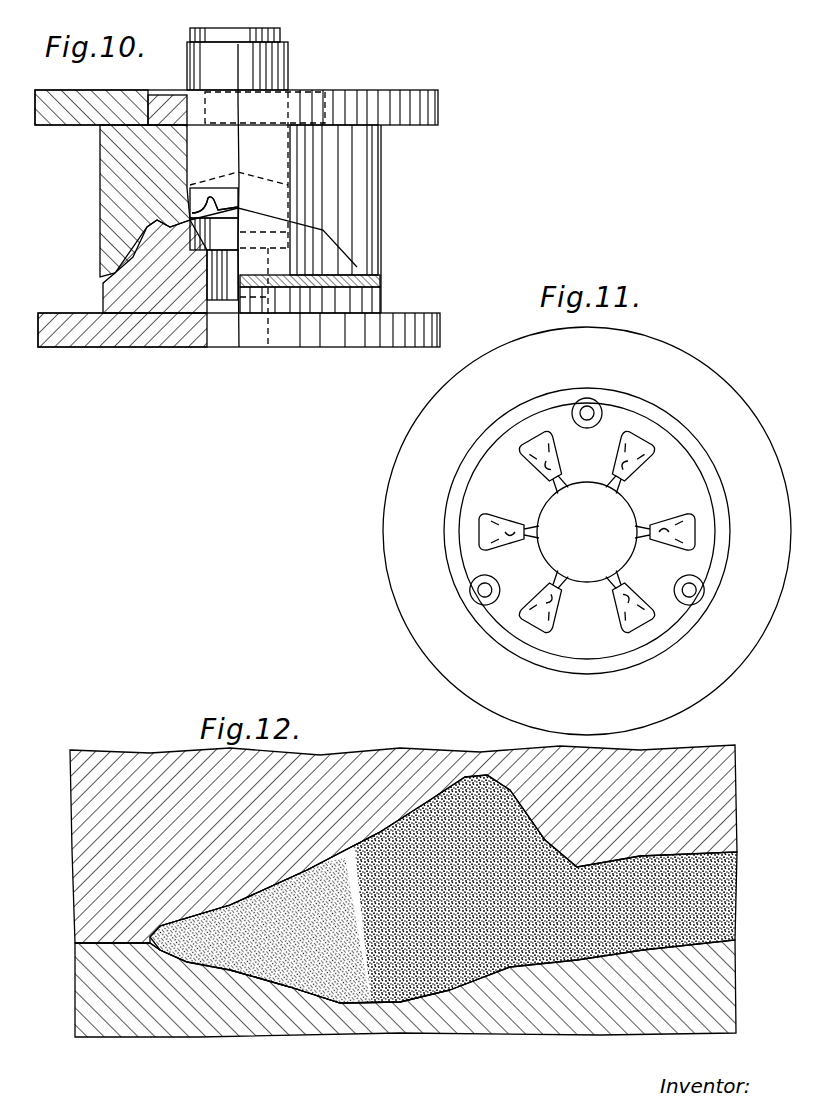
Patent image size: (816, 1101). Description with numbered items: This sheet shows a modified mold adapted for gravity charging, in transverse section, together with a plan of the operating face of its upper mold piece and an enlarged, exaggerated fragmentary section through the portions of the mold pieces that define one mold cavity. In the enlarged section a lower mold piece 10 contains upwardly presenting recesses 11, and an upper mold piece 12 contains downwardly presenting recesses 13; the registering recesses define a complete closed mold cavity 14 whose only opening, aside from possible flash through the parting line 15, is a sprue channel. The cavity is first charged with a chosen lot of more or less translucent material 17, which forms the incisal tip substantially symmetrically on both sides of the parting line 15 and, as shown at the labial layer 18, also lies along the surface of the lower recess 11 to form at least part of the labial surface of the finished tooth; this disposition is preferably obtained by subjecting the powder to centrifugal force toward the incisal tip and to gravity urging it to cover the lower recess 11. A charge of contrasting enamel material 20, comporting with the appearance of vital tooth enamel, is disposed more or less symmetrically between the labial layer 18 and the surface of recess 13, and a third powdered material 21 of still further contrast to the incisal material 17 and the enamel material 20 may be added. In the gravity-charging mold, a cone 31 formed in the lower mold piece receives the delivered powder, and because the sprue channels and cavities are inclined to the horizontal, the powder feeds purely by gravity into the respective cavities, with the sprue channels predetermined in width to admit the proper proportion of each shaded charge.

In FIG. 12, the lower mold piece 10 is at (118, 1022).
In FIG. 12, the upwardly presenting recesses 11 is at (292, 980).
In FIG. 12, the upper mold piece 12 is at (146, 758).
In FIG. 12, the downwardly presenting recesses 13 is at (274, 893).
In FIG. 12, the mold cavity 14 is at (149, 947).
In FIG. 12, the parting line 15 is at (100, 946).
In FIG. 12, the incisal tip material 17 is at (185, 915).
In FIG. 12, the labial layer 18 is at (334, 992).
In FIG. 12, the enamel material 20 is at (256, 934).
In FIG. 12, the third powdered material 21 is at (542, 885).
In FIG. 10, the cone 31 is at (223, 217).